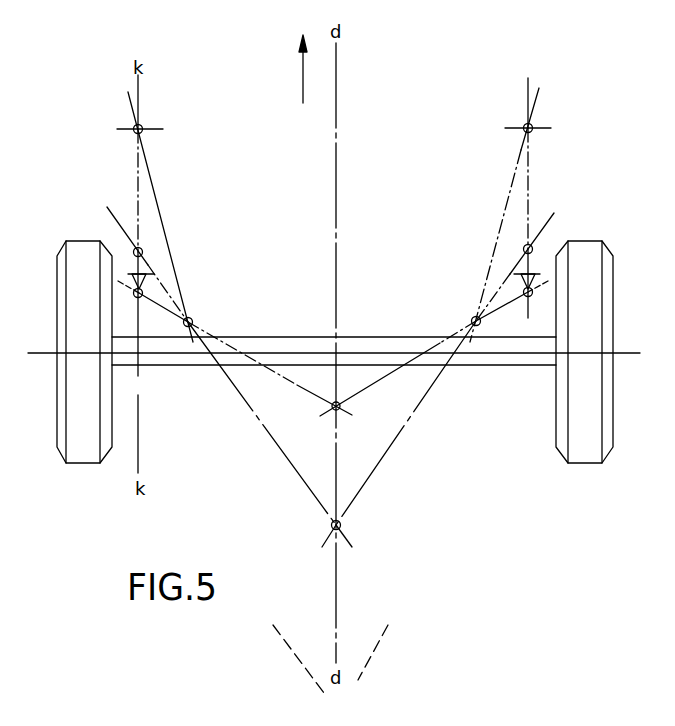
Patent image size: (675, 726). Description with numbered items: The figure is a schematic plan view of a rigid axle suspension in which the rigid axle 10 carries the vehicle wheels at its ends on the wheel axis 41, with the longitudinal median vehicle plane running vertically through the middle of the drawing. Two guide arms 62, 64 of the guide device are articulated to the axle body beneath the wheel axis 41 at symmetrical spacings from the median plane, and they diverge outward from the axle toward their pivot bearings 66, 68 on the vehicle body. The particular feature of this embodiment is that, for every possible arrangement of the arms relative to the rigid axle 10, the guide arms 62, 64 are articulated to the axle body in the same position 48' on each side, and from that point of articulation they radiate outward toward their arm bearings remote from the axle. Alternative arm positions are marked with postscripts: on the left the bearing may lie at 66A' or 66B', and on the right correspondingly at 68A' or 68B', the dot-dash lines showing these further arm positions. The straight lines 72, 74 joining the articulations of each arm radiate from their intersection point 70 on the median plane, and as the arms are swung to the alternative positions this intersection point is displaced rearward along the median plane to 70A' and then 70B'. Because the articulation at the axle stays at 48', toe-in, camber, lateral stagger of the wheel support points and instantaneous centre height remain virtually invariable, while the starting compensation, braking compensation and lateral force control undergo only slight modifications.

The rigid axle 10 is at (187, 371).
The wheel axis 41 is at (623, 349).
The point of articulation 48' is at (332, 302).
The guide arm 62 is at (174, 284).
The guide arm 64 is at (503, 308).
The pivot bearing 66 is at (150, 284).
The pivot bearing 68 is at (531, 297).
The alternative position of pivot bearing 66A' is at (159, 264).
The alternative position of pivot bearing 66B' is at (159, 112).
The alternative position of pivot bearing 68A' is at (530, 265).
The alternative position of pivot bearing 68B' is at (546, 112).
The intersection point 70 is at (337, 411).
The alternative intersection point 70A' is at (332, 434).
The alternative intersection point 70B' is at (339, 668).
The straight line 72 is at (306, 388).
The straight line 74 is at (392, 377).